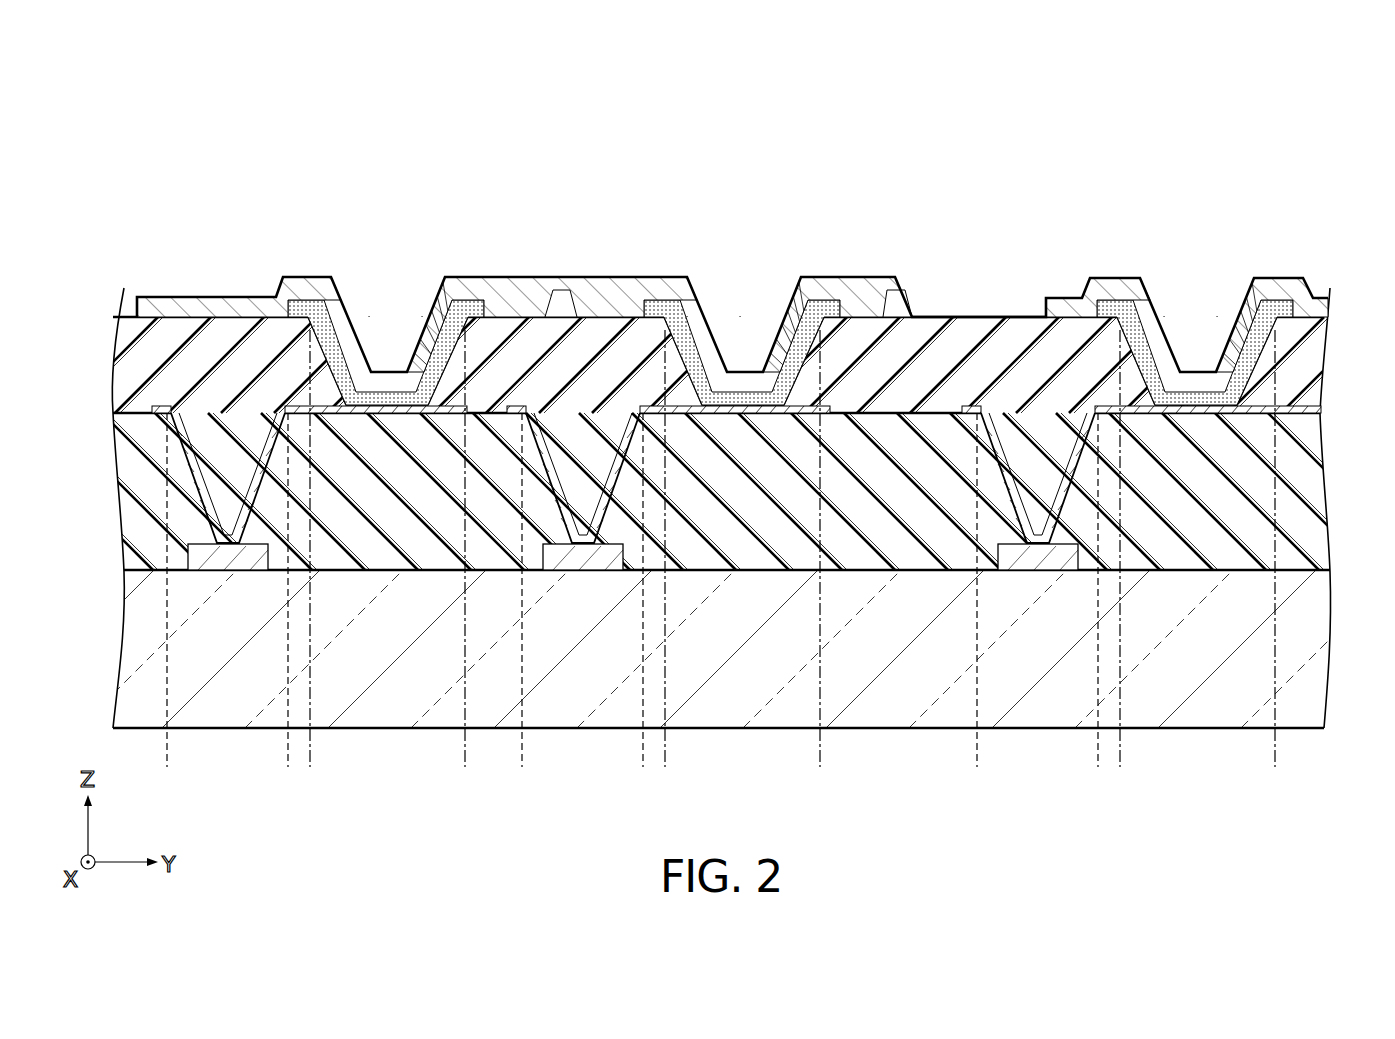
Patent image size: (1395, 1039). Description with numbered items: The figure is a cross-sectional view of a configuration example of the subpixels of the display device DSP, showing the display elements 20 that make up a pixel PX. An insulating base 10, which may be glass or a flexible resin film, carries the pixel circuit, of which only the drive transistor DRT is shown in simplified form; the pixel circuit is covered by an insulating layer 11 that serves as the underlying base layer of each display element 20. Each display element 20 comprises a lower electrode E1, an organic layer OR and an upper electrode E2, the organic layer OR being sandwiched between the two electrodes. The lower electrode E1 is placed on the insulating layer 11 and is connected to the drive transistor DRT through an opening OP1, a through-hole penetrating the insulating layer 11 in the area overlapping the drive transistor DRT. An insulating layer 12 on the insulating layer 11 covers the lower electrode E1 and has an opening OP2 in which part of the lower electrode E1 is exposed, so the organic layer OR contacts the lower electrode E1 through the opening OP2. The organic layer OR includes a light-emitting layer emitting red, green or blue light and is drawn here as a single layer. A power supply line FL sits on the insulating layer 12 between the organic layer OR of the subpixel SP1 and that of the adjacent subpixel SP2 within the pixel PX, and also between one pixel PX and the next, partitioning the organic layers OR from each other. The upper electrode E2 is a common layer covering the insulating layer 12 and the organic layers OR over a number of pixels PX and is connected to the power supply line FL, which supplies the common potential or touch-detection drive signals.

The display device DSP is at (236, 175).
The pixel PX is at (857, 93).
The subpixel SP1 is at (416, 155).
The subpixel SP2 is at (776, 153).
The display element 20 is at (732, 351).
The lower electrode E1 is at (736, 372).
The organic layer OR is at (790, 307).
The upper electrode E2 is at (732, 291).
The power supply line FL is at (563, 290).
The insulating layer 12 is at (1322, 377).
The insulating layer 11 is at (1311, 481).
The base 10 is at (1310, 641).
The drive transistor DRT is at (235, 572).
The opening OP1 is at (1088, 753).
The opening OP2 is at (1265, 753).